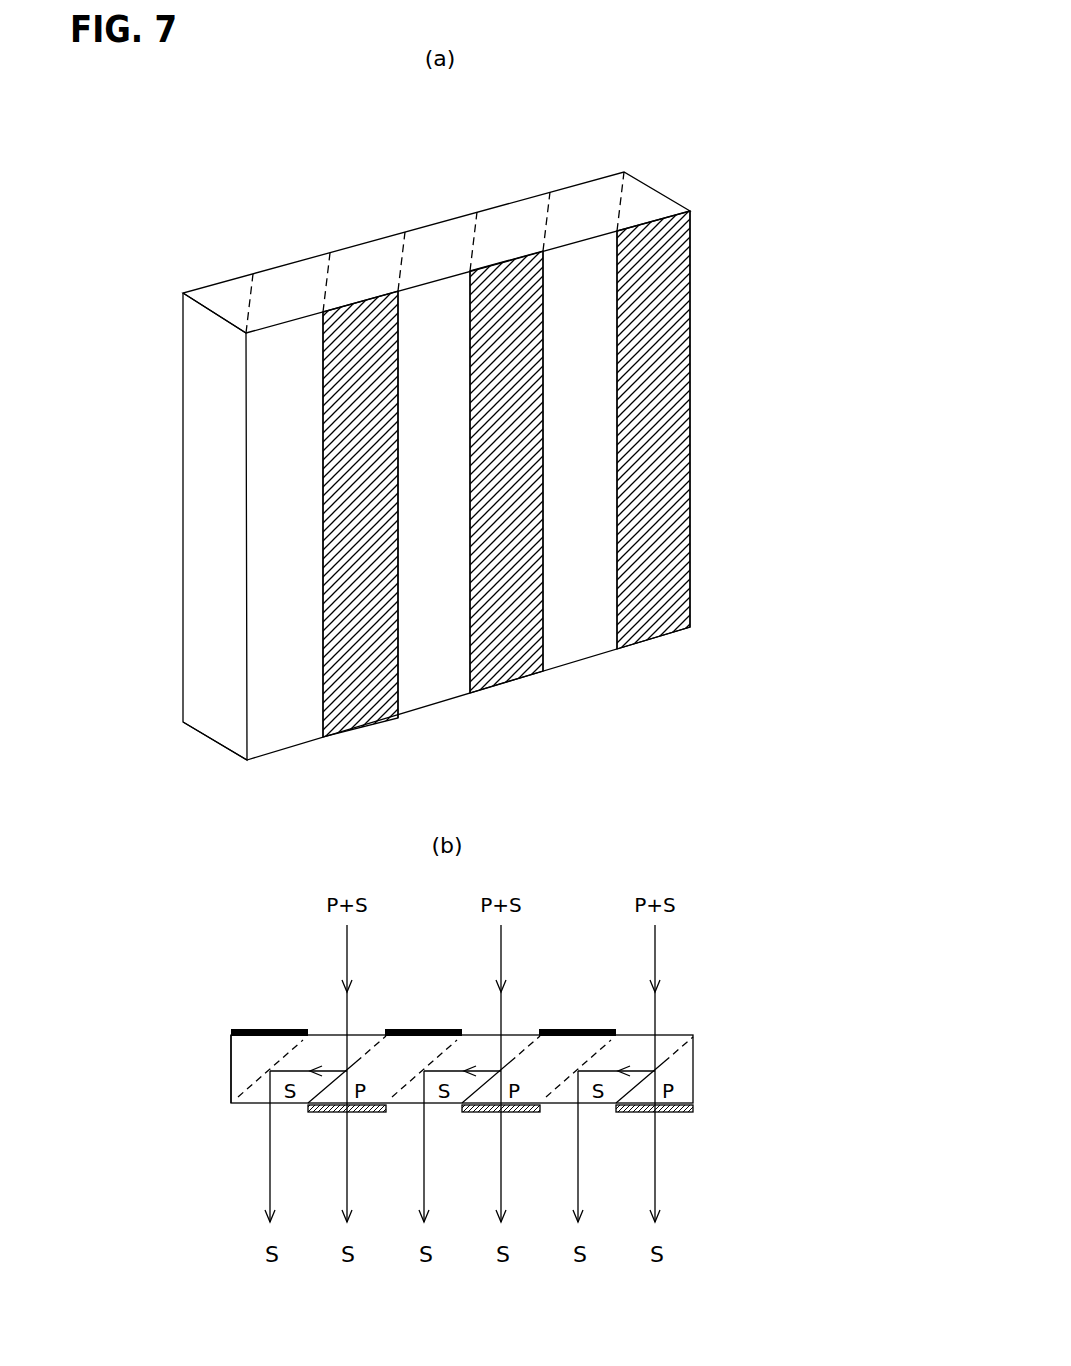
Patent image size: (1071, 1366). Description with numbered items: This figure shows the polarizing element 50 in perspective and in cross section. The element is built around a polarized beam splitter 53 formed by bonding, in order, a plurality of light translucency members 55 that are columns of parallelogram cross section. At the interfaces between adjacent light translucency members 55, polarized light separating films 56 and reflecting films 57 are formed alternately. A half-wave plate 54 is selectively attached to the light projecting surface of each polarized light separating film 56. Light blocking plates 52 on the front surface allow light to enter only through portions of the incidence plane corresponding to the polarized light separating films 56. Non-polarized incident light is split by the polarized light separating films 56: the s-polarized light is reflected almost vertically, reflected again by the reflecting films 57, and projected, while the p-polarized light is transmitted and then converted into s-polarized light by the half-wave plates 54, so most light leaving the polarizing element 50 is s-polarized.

The polarizing element 50 is at (706, 166).
The light blocking plate 52 is at (263, 1028).
The polarized beam splitter 53 is at (399, 432).
The λ/2 wave plate 54 is at (378, 720).
The light translucency member 55 is at (210, 428).
The polarized light separating film 56 is at (327, 293).
The reflecting film 57 is at (253, 303).